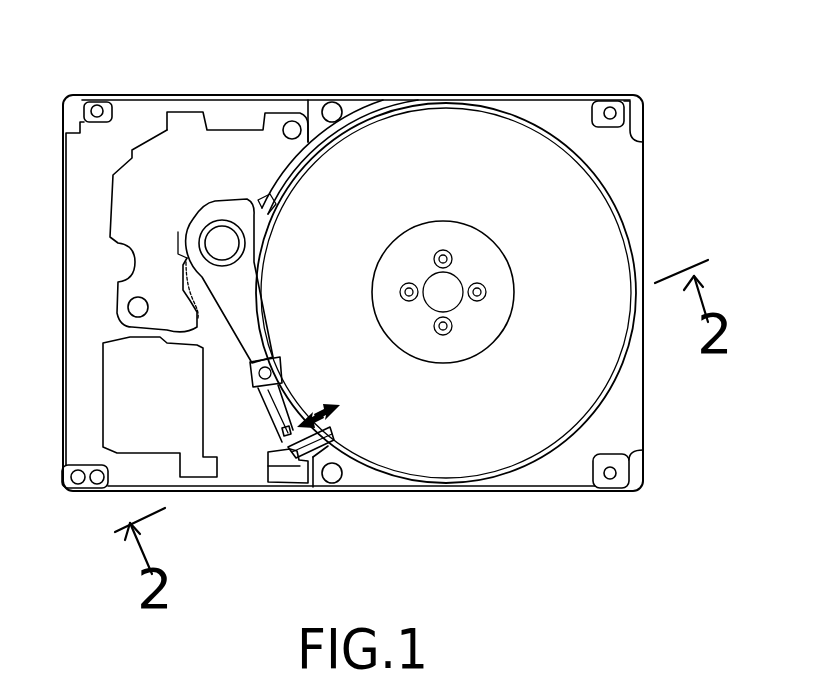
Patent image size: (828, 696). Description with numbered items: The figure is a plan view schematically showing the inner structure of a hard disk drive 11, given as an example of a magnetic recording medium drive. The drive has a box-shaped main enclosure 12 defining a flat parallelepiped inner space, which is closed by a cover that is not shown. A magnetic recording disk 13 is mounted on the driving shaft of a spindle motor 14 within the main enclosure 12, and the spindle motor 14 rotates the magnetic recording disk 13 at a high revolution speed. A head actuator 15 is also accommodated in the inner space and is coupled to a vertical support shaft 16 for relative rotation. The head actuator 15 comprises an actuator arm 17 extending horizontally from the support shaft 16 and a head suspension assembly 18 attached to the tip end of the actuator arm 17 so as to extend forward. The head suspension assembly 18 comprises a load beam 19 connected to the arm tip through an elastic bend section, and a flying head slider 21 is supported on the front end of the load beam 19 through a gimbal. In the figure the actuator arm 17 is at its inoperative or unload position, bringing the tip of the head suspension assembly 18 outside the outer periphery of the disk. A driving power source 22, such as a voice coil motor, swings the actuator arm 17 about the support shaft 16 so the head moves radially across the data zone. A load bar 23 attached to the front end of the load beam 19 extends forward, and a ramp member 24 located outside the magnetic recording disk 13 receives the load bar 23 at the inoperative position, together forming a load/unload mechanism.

The hard disk drive 11 is at (384, 86).
The main enclosure 12 is at (641, 426).
The magnetic recording disk 13 is at (622, 358).
The spindle motor 14 is at (453, 280).
The head actuator 15 is at (257, 261).
The vertical support shaft 16 is at (201, 232).
The actuator arm 17 is at (266, 322).
The head suspension assembly 18 is at (285, 395).
The load beam 19 is at (262, 409).
The flying head slider 21 is at (281, 435).
The driving power source 22 is at (173, 250).
The load bar 23 is at (282, 470).
The ramp member 24 is at (306, 478).